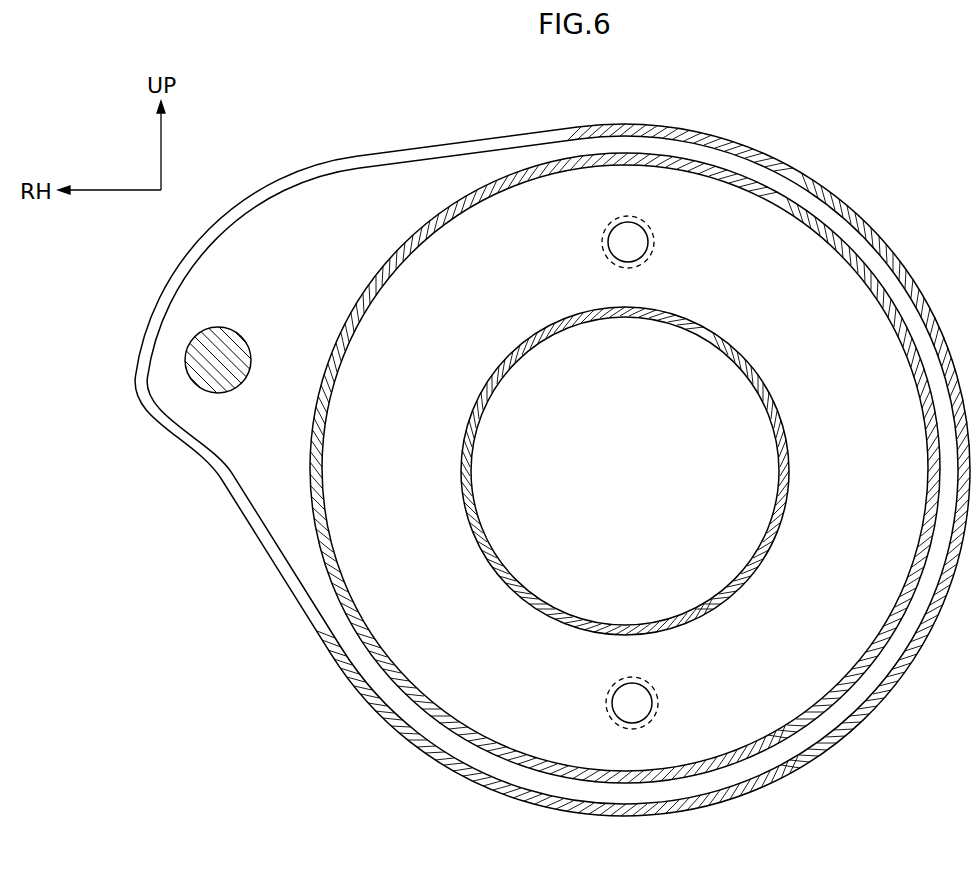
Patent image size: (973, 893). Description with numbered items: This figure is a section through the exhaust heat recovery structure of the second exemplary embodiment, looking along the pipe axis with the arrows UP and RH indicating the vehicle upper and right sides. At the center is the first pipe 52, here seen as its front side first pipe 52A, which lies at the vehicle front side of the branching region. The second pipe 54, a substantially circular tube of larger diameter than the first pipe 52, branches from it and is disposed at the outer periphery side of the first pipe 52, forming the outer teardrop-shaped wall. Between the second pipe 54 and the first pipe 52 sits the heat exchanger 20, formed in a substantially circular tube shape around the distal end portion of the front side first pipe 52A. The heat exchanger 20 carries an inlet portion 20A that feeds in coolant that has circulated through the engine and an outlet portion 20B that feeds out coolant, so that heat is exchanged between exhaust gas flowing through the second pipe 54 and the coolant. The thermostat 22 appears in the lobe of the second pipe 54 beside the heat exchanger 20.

The heat exchanger 20 is at (384, 265).
The inlet portion 20A is at (657, 675).
The outlet portion 20B is at (657, 234).
The thermostat 22 is at (209, 399).
The first pipe 52 is at (668, 466).
The front side first pipe 52A is at (740, 352).
The second pipe 54 is at (824, 189).